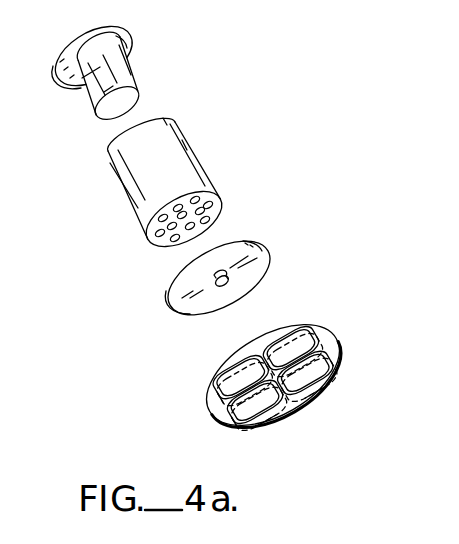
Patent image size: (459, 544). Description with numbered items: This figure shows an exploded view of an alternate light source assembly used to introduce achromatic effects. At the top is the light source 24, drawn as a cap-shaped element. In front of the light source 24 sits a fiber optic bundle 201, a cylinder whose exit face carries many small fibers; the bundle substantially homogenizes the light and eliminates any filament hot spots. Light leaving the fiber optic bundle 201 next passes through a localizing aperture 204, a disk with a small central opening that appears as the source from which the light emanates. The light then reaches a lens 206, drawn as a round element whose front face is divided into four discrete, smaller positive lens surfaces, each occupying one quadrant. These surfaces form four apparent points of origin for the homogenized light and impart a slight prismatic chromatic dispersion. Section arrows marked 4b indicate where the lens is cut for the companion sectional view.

The light source 24 is at (135, 73).
The fiber optic bundle 201 is at (190, 143).
The localizing aperture 204 is at (262, 255).
The lens 206 is at (341, 339).
The section line 4b is at (235, 373).